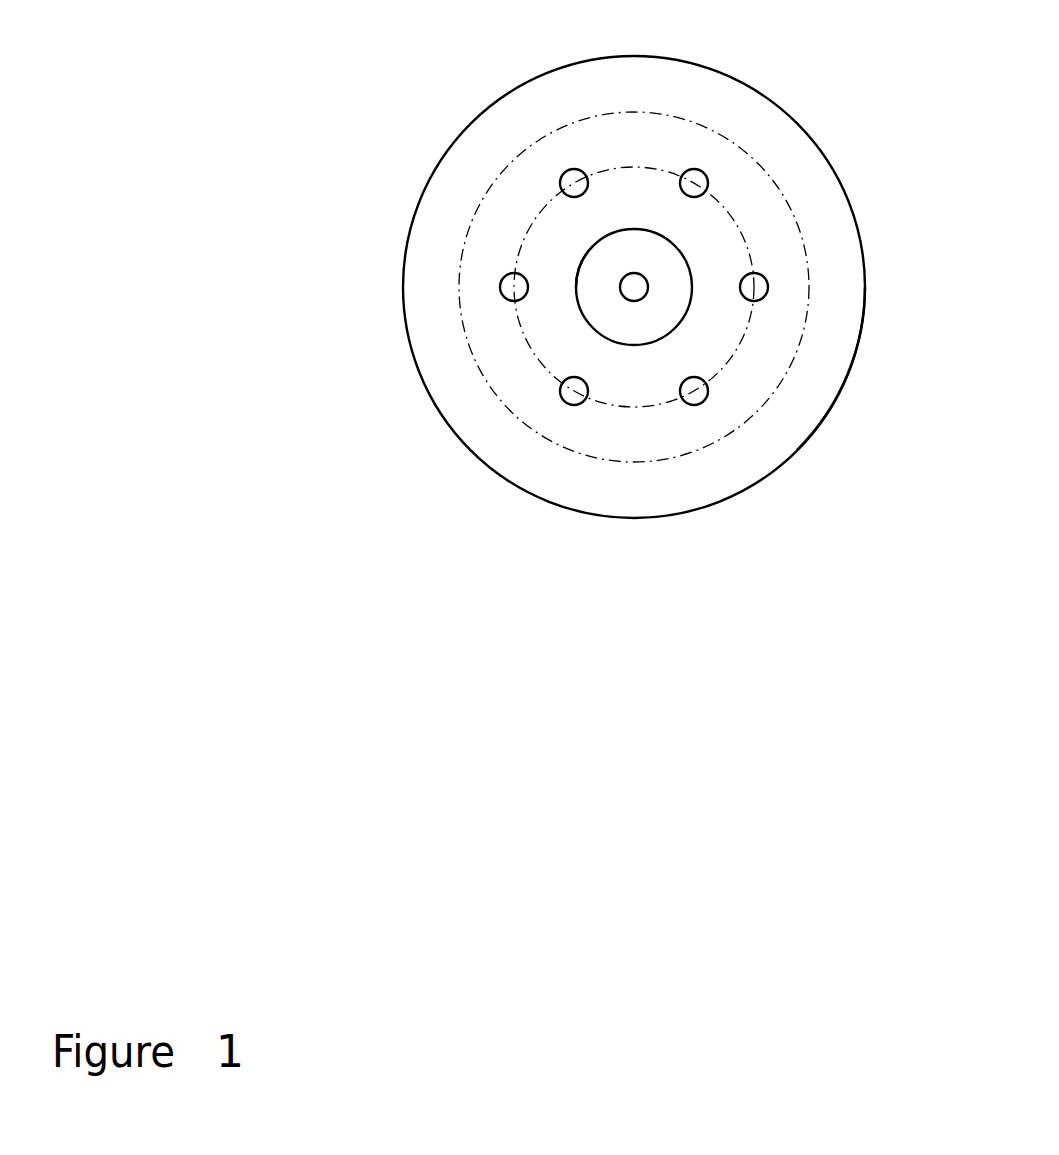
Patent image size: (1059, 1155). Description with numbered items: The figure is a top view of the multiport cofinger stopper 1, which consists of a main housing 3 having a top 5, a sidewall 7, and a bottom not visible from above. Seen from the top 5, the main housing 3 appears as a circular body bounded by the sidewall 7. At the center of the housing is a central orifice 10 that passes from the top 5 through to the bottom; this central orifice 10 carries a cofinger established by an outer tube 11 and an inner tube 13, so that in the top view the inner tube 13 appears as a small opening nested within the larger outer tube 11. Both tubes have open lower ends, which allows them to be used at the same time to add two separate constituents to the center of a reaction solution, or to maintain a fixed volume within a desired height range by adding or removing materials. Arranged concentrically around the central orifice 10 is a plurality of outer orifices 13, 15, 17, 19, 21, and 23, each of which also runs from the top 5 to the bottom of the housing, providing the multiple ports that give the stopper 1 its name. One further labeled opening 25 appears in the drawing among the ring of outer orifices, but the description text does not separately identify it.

The multiport cofinger stopper 1 is at (858, 118).
The main housing 3 is at (813, 193).
The top 5 is at (667, 287).
The sidewall 7 is at (865, 357).
The central orifice 10 is at (586, 248).
The outer tube 11 is at (633, 230).
The inner tube 13 is at (621, 298).
The outer orifice 15 is at (570, 398).
The outer orifice 17 is at (712, 405).
The outer orifice 19 is at (770, 275).
The outer orifice 21 is at (697, 165).
The outer orifice 23 is at (563, 176).
The mounting hole 25 is at (500, 285).